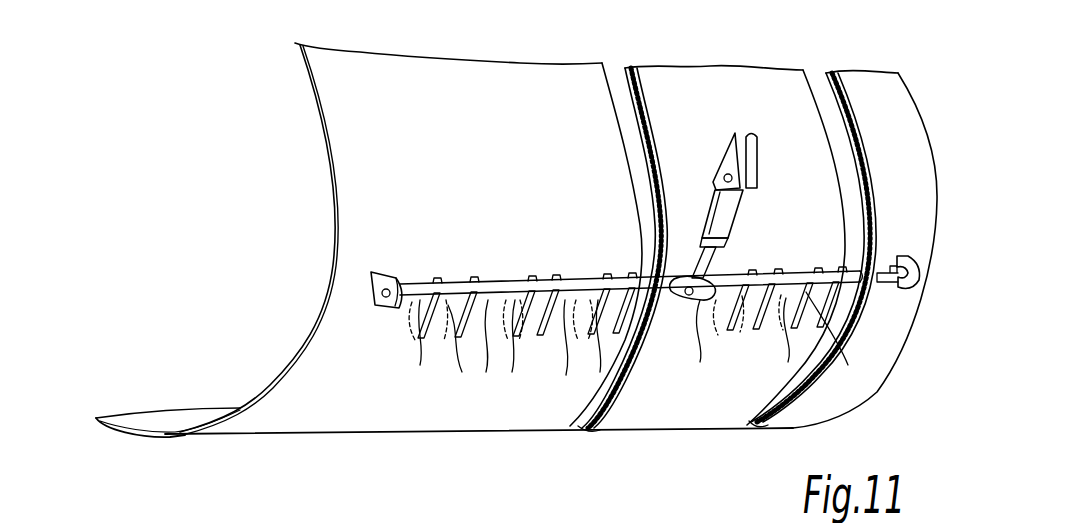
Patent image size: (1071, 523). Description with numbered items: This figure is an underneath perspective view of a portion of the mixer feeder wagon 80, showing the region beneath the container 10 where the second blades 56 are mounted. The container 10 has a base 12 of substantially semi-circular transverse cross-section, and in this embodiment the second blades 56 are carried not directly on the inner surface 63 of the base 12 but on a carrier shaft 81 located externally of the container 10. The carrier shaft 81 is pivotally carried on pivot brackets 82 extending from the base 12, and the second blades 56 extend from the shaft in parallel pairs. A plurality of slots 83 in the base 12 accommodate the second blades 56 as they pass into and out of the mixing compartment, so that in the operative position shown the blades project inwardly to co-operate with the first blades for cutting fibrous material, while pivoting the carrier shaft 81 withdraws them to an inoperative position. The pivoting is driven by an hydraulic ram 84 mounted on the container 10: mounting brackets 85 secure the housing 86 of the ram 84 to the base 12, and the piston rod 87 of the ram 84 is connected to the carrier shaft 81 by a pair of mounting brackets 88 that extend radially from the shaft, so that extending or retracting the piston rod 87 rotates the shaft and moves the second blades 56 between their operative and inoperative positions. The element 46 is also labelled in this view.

The container 10 is at (277, 413).
The base 12 is at (310, 413).
The cutting edge 46 is at (527, 522).
The second blades 56 is at (433, 340).
The inner surface 63 is at (187, 413).
The mixer feeder wagon 80 is at (250, 153).
The carrier shaft 81 is at (492, 290).
The pivot brackets 82 is at (384, 273).
The slots 83 is at (417, 348).
The hydraulic ram 84 is at (732, 200).
The mounting brackets 85 is at (728, 157).
The housing 86 is at (747, 190).
The piston rod 87 is at (716, 257).
The mounting brackets 88 is at (676, 302).